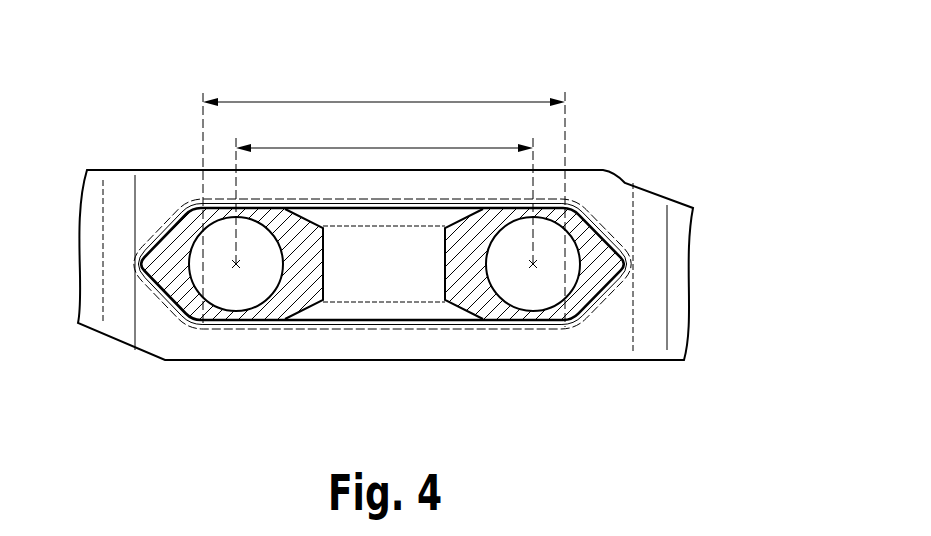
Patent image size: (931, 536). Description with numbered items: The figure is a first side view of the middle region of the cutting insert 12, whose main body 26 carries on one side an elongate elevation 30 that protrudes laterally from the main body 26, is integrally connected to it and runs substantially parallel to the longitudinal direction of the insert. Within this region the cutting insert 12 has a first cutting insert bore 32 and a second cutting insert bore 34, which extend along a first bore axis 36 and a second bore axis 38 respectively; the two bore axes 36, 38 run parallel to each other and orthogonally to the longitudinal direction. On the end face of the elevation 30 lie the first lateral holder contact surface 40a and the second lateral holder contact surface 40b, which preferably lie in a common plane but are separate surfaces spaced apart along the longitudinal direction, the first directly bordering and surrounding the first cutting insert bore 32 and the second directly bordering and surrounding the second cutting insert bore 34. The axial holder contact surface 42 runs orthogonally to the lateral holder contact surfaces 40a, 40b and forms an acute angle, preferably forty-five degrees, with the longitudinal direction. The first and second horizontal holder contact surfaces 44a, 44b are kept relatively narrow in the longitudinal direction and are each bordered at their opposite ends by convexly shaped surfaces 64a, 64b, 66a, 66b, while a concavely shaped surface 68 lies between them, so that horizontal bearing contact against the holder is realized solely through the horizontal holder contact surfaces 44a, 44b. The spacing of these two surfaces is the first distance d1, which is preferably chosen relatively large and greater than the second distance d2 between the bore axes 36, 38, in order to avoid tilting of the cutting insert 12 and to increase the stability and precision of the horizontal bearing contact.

The cutting insert 12 is at (682, 114).
The main body 26 is at (92, 197).
The elevation 30 is at (399, 261).
The first cutting insert bore 32 is at (195, 212).
The second cutting insert bore 34 is at (576, 212).
The first bore axis 36 is at (236, 264).
The second bore axis 38 is at (533, 264).
The first lateral holder contact surface 40a is at (160, 250).
The second lateral holder contact surface 40b is at (610, 250).
The axial holder contact surface 42 is at (614, 222).
The first horizontal holder contact surface 44a is at (209, 330).
The second horizontal holder contact surface 44b is at (562, 327).
The convexly shaped surface 64a is at (187, 328).
The convexly shaped surface 64b is at (537, 325).
The convexly shaped surface 66a is at (235, 322).
The convexly shaped surface 66b is at (583, 320).
The concavely shaped surface 68 is at (388, 327).
The first distance d1 is at (384, 86).
The second distance d2 is at (384, 134).